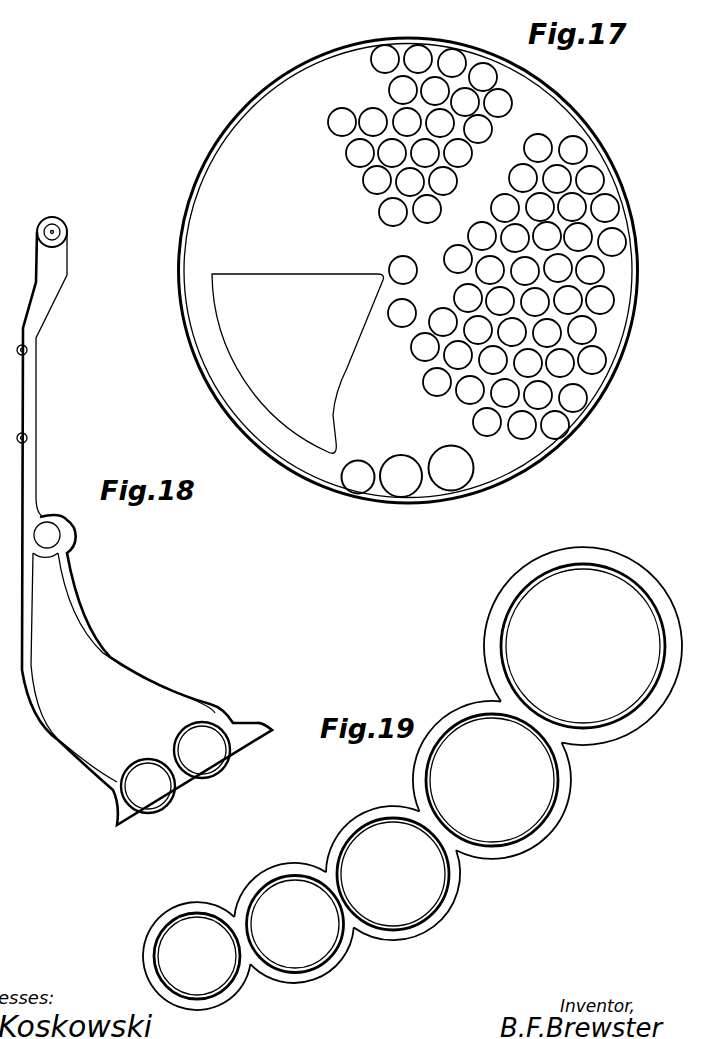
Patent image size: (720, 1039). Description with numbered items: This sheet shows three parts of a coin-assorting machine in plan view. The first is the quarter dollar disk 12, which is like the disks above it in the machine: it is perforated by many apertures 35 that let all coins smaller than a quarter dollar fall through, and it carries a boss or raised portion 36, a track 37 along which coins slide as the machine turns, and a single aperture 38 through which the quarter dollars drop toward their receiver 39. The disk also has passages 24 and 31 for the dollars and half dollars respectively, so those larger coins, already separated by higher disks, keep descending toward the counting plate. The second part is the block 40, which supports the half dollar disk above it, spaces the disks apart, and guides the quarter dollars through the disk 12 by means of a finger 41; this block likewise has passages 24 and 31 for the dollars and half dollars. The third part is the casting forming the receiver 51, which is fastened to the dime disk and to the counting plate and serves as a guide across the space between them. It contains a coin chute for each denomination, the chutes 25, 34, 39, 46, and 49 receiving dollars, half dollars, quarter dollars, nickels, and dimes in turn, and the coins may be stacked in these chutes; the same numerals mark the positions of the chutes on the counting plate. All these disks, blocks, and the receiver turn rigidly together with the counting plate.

In FIG. 17, the quarter dollar disk 12 is at (523, 467).
In FIG. 17, the dollar passage 24 is at (448, 492).
In FIG. 18, the dollar passage 24 is at (212, 775).
In FIG. 19, the dollar coin chute 25 is at (625, 702).
In FIG. 17, the half dollar passage 31 is at (400, 497).
In FIG. 18, the half dollar passage 31 is at (158, 803).
In FIG. 19, the half dollar coin chute 34 is at (553, 807).
In FIG. 17, the apertures 35 is at (607, 302).
In FIG. 17, the boss 36 is at (323, 280).
In FIG. 17, the track 37 is at (213, 373).
In FIG. 17, the quarter dollar aperture 38 is at (358, 490).
In FIG. 19, the quarter dollar coin chute 39 is at (428, 898).
In FIG. 18, the block 40 is at (72, 603).
In FIG. 18, the finger 41 is at (122, 817).
In FIG. 19, the nickel coin chute 46 is at (327, 950).
In FIG. 19, the dime coin chute 49 is at (175, 990).
In FIG. 19, the receiver 51 is at (505, 698).